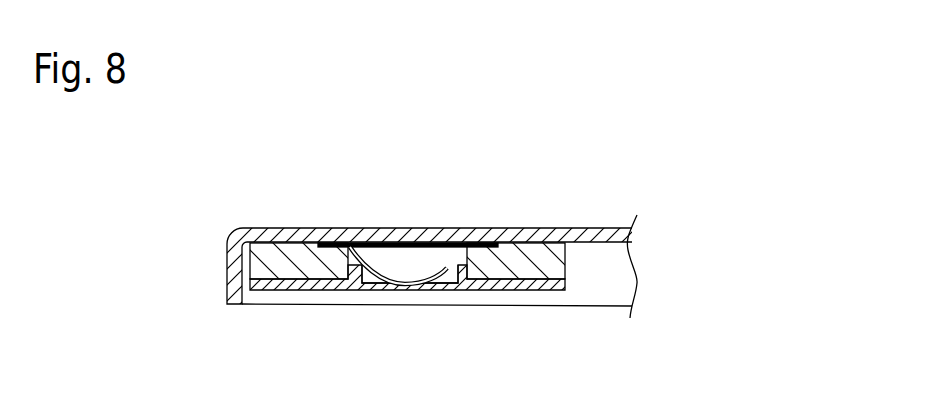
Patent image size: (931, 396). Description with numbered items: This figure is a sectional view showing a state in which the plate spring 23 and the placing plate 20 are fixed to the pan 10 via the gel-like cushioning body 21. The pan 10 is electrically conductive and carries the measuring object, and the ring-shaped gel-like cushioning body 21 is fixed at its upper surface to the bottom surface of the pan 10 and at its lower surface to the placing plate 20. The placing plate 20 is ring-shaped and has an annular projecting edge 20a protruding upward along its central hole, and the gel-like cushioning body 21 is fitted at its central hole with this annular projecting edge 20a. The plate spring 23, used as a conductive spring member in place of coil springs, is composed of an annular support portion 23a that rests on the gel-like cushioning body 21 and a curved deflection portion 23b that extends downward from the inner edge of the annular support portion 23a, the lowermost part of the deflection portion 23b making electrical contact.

The pan 10 is at (286, 228).
The placing plate 20 is at (407, 319).
The annular projecting edge 20a is at (372, 290).
The gel-like cushioning body 21 is at (260, 258).
The plate spring 23 is at (408, 267).
The annular support portion 23a is at (333, 242).
The deflection portion 23b is at (433, 285).